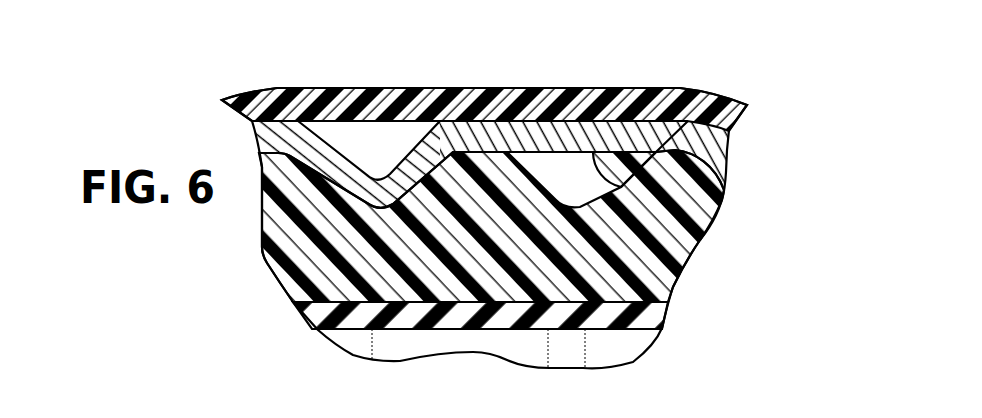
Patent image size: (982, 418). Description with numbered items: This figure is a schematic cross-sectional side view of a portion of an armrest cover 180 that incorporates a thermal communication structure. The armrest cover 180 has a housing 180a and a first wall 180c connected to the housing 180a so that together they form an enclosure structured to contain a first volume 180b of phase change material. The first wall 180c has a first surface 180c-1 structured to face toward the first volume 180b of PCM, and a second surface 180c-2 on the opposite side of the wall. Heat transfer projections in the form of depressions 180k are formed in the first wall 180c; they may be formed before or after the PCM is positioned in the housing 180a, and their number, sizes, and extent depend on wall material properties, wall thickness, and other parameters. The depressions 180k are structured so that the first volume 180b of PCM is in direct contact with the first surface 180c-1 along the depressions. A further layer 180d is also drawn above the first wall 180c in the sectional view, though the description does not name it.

The armrest cover 180 is at (733, 97).
The housing 180a is at (454, 318).
The first volume of PCM 180b is at (668, 233).
The first wall 180c is at (547, 110).
The first surface 180c-1 is at (650, 183).
The second surface 180c-2 is at (488, 122).
The top layer 180d is at (438, 100).
The depressions 180k is at (377, 150).